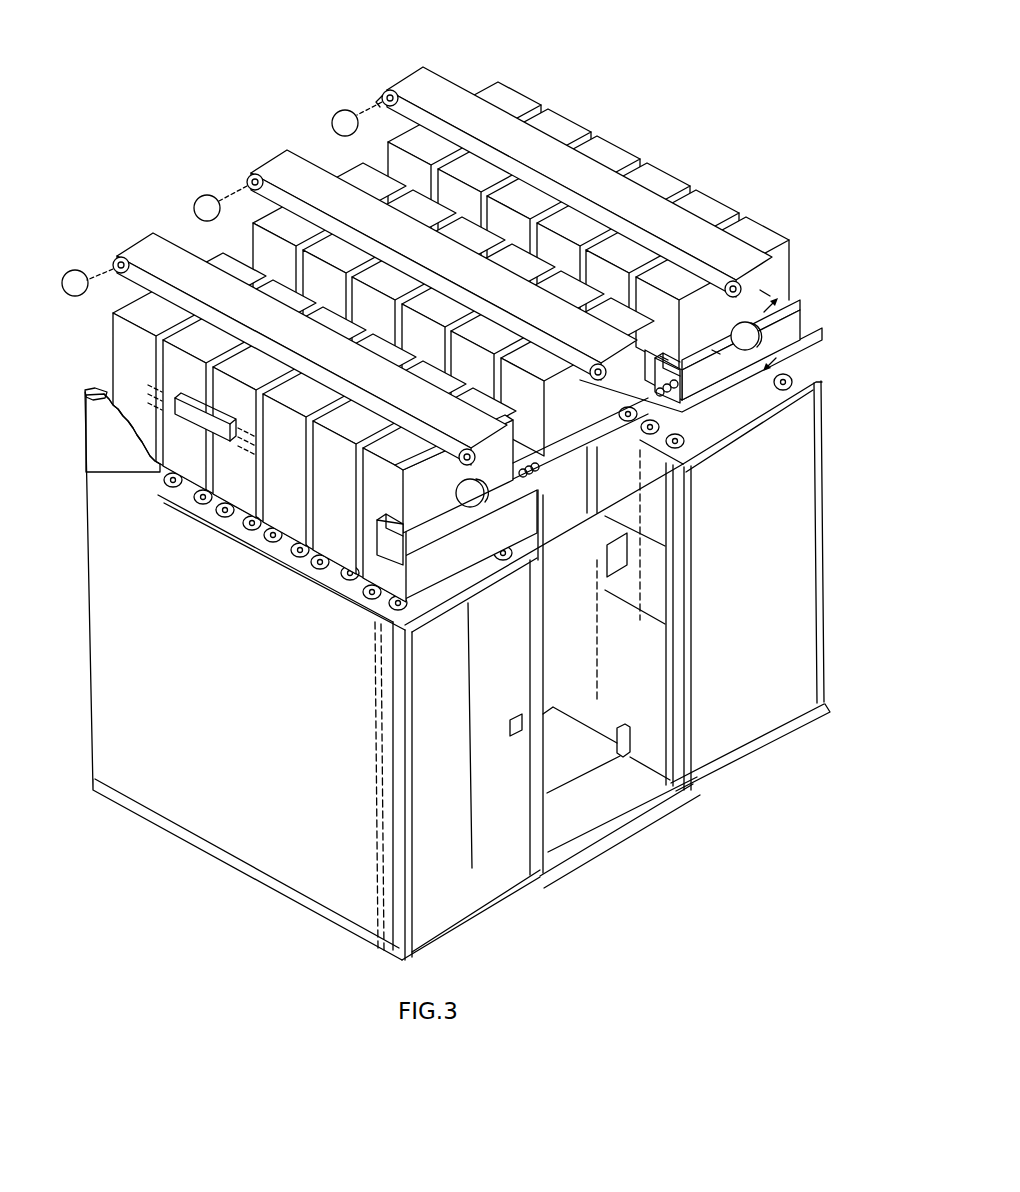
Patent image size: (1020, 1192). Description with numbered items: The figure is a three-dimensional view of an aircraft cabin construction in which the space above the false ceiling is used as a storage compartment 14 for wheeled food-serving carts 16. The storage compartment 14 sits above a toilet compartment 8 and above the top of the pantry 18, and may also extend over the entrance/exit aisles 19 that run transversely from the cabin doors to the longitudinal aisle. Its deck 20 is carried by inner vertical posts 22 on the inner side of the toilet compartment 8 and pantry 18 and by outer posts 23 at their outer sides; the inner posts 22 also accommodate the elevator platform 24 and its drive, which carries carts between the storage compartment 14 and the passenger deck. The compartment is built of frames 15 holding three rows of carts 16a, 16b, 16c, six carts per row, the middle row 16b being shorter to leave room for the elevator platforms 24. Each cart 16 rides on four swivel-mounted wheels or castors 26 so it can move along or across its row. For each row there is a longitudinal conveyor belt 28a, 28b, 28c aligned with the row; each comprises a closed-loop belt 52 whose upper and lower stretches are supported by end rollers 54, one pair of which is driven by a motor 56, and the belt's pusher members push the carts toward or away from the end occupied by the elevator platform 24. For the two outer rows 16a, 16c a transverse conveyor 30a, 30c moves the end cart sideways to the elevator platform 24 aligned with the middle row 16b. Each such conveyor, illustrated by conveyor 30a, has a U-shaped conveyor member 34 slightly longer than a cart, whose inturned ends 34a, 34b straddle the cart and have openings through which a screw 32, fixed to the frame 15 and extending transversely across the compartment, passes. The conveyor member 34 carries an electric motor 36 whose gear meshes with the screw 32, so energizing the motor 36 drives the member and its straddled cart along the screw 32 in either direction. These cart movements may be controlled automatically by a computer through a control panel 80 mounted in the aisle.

The toilet compartment 8 is at (437, 773).
The storage compartment 14 is at (467, 320).
The frame 15 is at (197, 420).
The wheeled food-serving cart 16 is at (466, 326).
The first outer row of carts 16a is at (520, 88).
The middle row of carts 16b is at (296, 262).
The second outer row of carts 16c is at (257, 277).
The pantry 18 is at (790, 500).
The entrance/exit aisle 19 is at (580, 656).
The deck 20 is at (815, 378).
The inner vertical post 22 is at (535, 686).
The outer post 23 is at (83, 395).
The elevator platform 24 is at (630, 787).
The wheel or castor 26 is at (293, 572).
The conveyor belt 28a is at (438, 62).
The conveyor belt 28b is at (276, 153).
The conveyor belt 28c is at (143, 237).
The transverse conveyor 30a is at (804, 312).
The transverse conveyor 30c is at (390, 518).
The screw 32 is at (566, 443).
The U-shaped conveyor member 34 is at (715, 350).
The inturned end 34a is at (764, 290).
The inturned end 34b is at (664, 356).
The electric motor 36 is at (742, 351).
The closed-loop belt 52 is at (437, 235).
The end roller 54 is at (384, 92).
The motor 56 is at (345, 110).
The control panel 80 is at (633, 557).